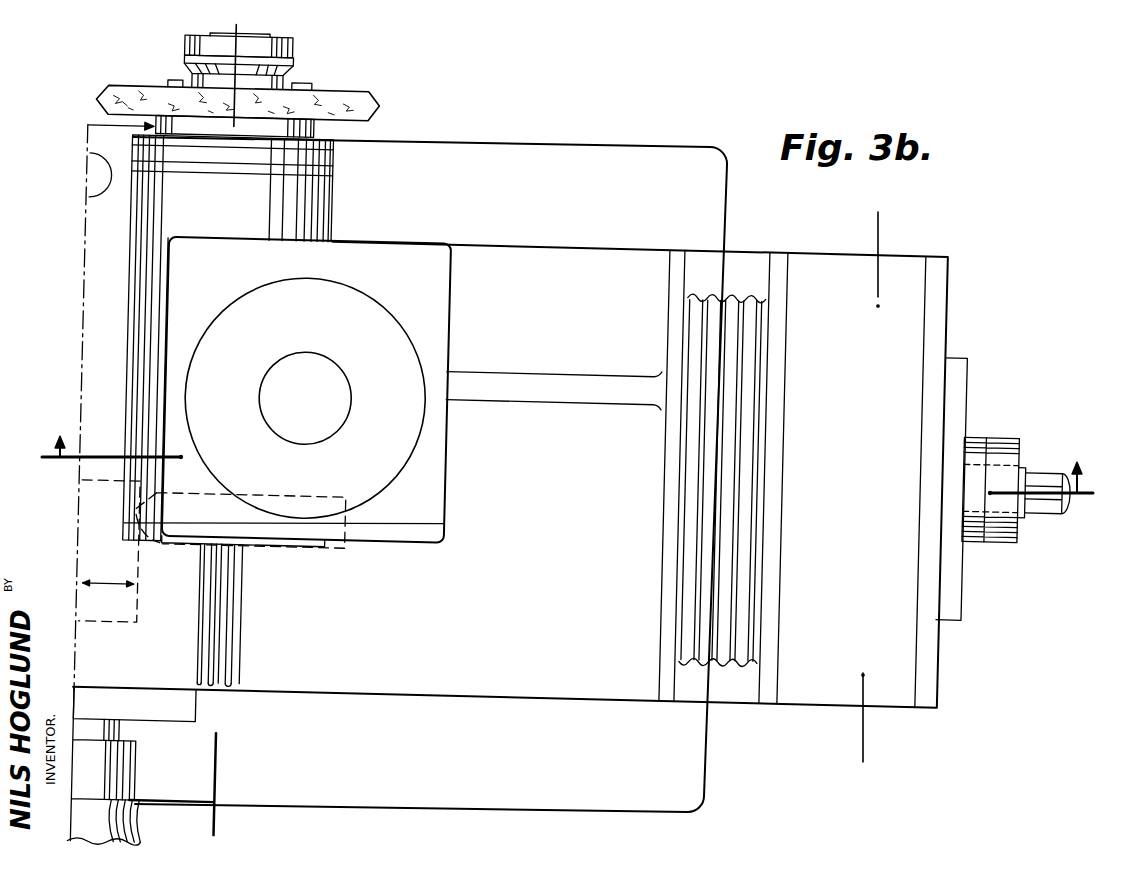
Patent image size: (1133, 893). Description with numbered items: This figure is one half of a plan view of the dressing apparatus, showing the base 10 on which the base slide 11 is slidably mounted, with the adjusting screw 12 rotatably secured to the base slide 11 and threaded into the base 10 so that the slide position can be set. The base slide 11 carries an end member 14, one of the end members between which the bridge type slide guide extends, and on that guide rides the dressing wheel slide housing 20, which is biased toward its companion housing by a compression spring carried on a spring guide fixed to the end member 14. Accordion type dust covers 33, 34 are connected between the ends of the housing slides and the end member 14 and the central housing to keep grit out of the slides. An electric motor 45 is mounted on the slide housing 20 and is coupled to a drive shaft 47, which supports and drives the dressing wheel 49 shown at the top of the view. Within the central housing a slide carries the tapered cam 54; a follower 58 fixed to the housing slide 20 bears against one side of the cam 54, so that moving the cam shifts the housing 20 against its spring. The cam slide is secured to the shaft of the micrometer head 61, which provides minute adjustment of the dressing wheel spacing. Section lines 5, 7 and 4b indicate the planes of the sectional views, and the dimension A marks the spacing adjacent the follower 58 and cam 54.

The base 10 is at (538, 795).
The base slide 11 is at (432, 683).
The adjusting screw 12 is at (1043, 477).
The end member 14 is at (810, 265).
The dressing wheel slide housing 20 is at (524, 372).
The accordion type dust cover 33 is at (735, 297).
The accordion type dust cover 34 is at (220, 688).
The electric motor 45 is at (350, 290).
The drive shaft 47 is at (272, 36).
The dressing wheel 49 is at (372, 100).
The tapered cam 54 is at (118, 623).
The follower 58 is at (157, 548).
The micrometer head 61 is at (135, 770).
The section line 5- 5 is at (230, 47).
The section line 7- 7 is at (880, 228).
The section line 4b- 4b is at (570, 482).
The dimension A is at (108, 595).